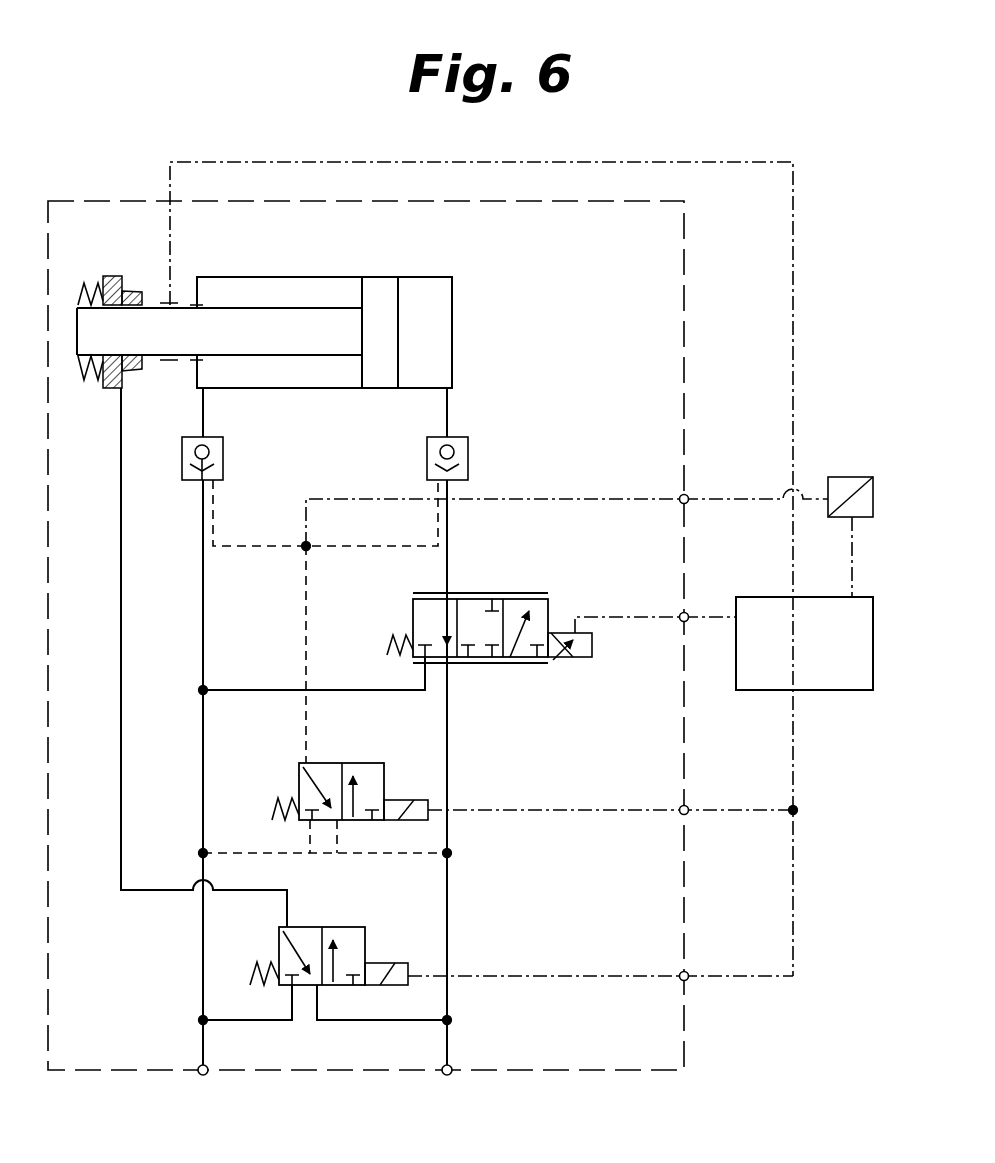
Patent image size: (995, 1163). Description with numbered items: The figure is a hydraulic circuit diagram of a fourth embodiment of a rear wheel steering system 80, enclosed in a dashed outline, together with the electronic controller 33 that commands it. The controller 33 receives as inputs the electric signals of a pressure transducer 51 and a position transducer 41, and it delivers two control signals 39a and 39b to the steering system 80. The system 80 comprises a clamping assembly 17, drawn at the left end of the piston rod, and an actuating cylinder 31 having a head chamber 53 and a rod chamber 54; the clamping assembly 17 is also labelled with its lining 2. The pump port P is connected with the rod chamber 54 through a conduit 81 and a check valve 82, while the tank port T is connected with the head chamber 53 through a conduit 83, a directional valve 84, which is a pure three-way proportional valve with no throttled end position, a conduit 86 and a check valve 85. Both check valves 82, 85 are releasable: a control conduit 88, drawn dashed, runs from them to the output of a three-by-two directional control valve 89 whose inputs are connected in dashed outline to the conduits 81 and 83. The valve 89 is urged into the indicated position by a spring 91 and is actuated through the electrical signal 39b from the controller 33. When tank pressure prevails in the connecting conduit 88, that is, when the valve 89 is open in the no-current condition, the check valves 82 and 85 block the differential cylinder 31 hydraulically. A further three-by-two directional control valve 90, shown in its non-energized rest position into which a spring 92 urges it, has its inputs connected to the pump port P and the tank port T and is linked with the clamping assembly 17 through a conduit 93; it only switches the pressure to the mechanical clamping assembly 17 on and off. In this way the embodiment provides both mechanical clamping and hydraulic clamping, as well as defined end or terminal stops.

The brake lining 2 is at (110, 277).
The clamping assembly 17 is at (98, 395).
The actuating cylinder 31 is at (418, 275).
The electronic controller 33 is at (836, 690).
The control signal 39a is at (617, 612).
The control signal 39b is at (578, 808).
The position transducer 41 is at (176, 305).
The pressure transducer 51 is at (850, 476).
The head chamber 53 is at (445, 328).
The rod chamber 54 is at (317, 388).
The rear wheel steering system 80 is at (690, 1031).
The conduit 81 is at (205, 777).
The check valve 82 is at (228, 452).
The conduit 83 is at (449, 737).
The directional valve 84 is at (523, 590).
The check valve 85 is at (472, 452).
The conduit 86 is at (449, 552).
The control conduit 88 is at (272, 548).
The directional control valve 89 is at (382, 760).
The directional control valve 90 is at (368, 923).
The spring 91 is at (287, 800).
The spring 92 is at (268, 960).
The conduit 93 is at (123, 733).